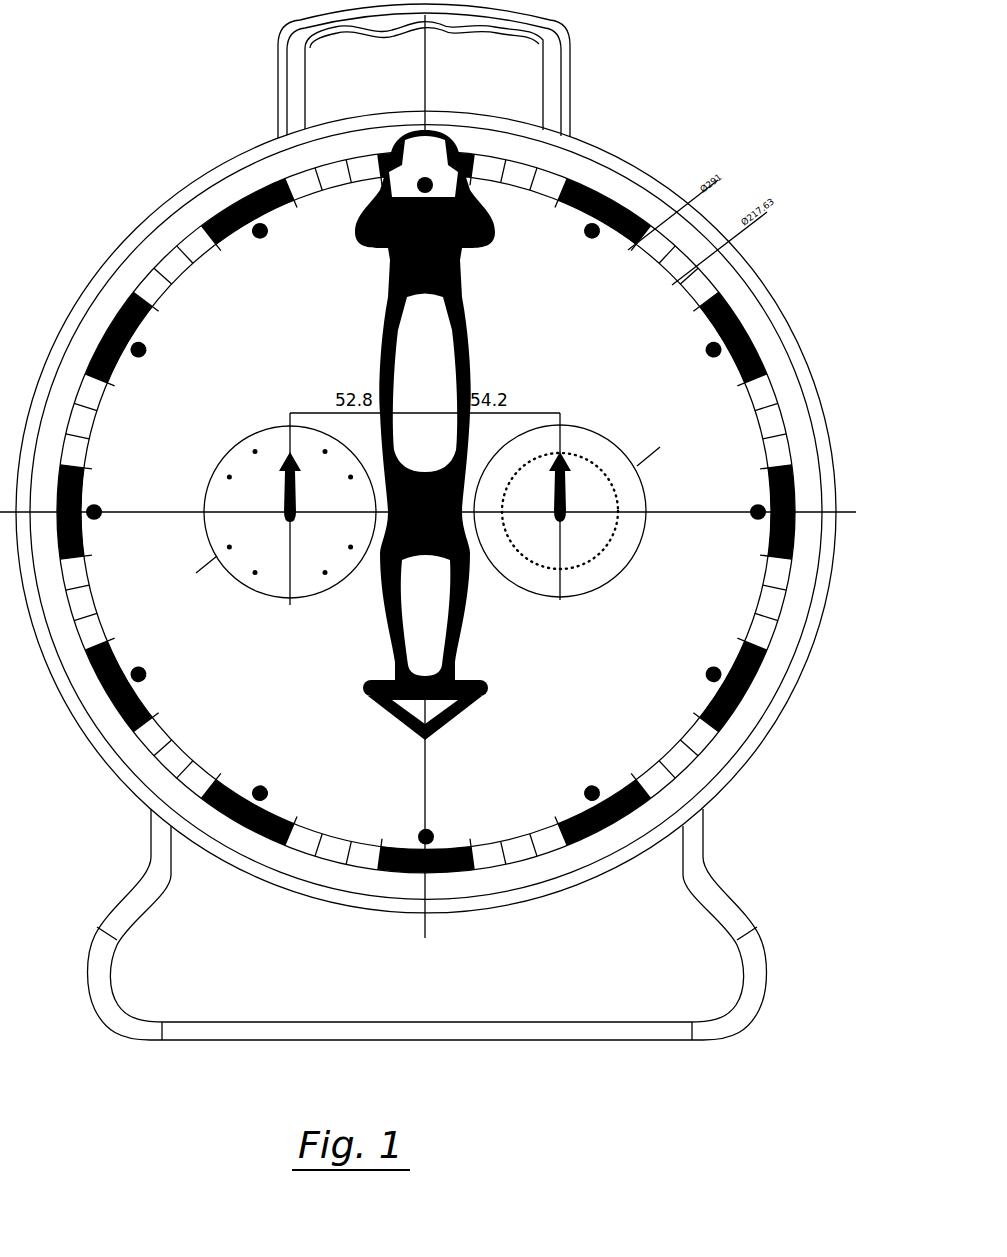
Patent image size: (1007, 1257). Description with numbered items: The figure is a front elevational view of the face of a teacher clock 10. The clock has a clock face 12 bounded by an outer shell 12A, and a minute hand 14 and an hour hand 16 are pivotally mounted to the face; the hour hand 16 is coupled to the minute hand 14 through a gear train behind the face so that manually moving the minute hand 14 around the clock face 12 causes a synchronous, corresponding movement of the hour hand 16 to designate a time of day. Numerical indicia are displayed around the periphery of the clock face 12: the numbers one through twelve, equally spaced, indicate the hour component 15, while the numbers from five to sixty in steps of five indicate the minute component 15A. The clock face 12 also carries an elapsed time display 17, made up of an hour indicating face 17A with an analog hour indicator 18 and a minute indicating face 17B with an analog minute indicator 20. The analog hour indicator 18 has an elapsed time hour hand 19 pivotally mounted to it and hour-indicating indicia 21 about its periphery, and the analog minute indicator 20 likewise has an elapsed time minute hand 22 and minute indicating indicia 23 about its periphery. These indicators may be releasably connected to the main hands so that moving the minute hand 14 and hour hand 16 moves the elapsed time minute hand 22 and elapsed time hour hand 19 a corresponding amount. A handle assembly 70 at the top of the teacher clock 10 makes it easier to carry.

The teacher clock 10 is at (650, 142).
The clock face 12 is at (208, 266).
The outer shell 12A is at (778, 284).
The minute hand 14 is at (465, 334).
The hour component 15 is at (687, 604).
The minute component 15A is at (748, 686).
The hour hand 16 is at (488, 690).
The elapsed time display 17 is at (264, 513).
The hour indicating face 17A is at (327, 586).
The minute indicating face 17B is at (517, 586).
The analog hour indicator 18 is at (263, 586).
The elapsed time hour hand 19 is at (302, 490).
The analog minute indicator 20 is at (576, 507).
The hour-indicating indicia 21 is at (306, 450).
The elapsed time minute hand 22 is at (568, 494).
The minute indicating indicia 23 is at (568, 440).
The handle assembly 70 is at (556, 46).